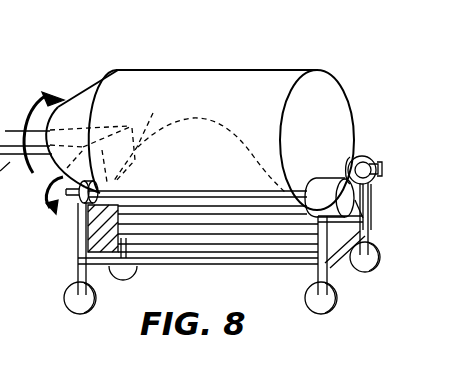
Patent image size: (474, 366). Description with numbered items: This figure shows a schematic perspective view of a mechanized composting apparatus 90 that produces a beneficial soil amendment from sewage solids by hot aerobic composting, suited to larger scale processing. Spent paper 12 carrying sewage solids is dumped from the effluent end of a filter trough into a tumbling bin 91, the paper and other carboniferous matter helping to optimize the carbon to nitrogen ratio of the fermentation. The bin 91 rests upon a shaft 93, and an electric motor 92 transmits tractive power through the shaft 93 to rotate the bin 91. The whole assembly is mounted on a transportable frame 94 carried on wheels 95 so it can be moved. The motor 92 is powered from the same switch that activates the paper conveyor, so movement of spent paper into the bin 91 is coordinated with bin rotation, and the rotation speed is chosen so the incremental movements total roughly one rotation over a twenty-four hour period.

The composting apparatus 90 is at (240, 68).
The tumbling bin 91 is at (337, 100).
The paper 12 is at (167, 140).
The shaft 93 is at (157, 191).
The electric motor 92 is at (319, 178).
The transportable frame 94 is at (372, 208).
The wheels 95 is at (380, 262).